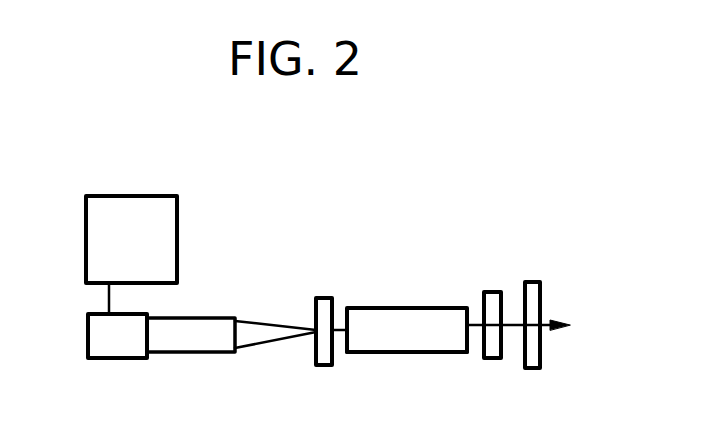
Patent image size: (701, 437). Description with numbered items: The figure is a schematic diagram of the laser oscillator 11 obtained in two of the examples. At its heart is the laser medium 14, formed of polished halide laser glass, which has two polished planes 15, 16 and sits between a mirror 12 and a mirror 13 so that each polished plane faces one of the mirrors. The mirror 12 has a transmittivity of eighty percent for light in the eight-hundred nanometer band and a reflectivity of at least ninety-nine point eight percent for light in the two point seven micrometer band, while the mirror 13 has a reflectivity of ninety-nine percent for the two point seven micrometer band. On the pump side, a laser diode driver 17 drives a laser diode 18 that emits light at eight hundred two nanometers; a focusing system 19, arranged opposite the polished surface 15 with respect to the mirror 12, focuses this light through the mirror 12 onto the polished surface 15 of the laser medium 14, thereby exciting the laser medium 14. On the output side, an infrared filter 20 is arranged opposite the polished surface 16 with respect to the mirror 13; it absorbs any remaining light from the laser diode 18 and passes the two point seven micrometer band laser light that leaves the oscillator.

The laser oscillator 11 is at (374, 211).
The mirror 12 is at (316, 312).
The mirror 13 is at (484, 298).
The laser medium 14 is at (398, 308).
The polished plane 15 is at (348, 352).
The polished plane 16 is at (469, 342).
The laser diode driver 17 is at (131, 196).
The laser diode 18 is at (118, 360).
The focusing system 19 is at (202, 353).
The infrared filter 20 is at (541, 300).